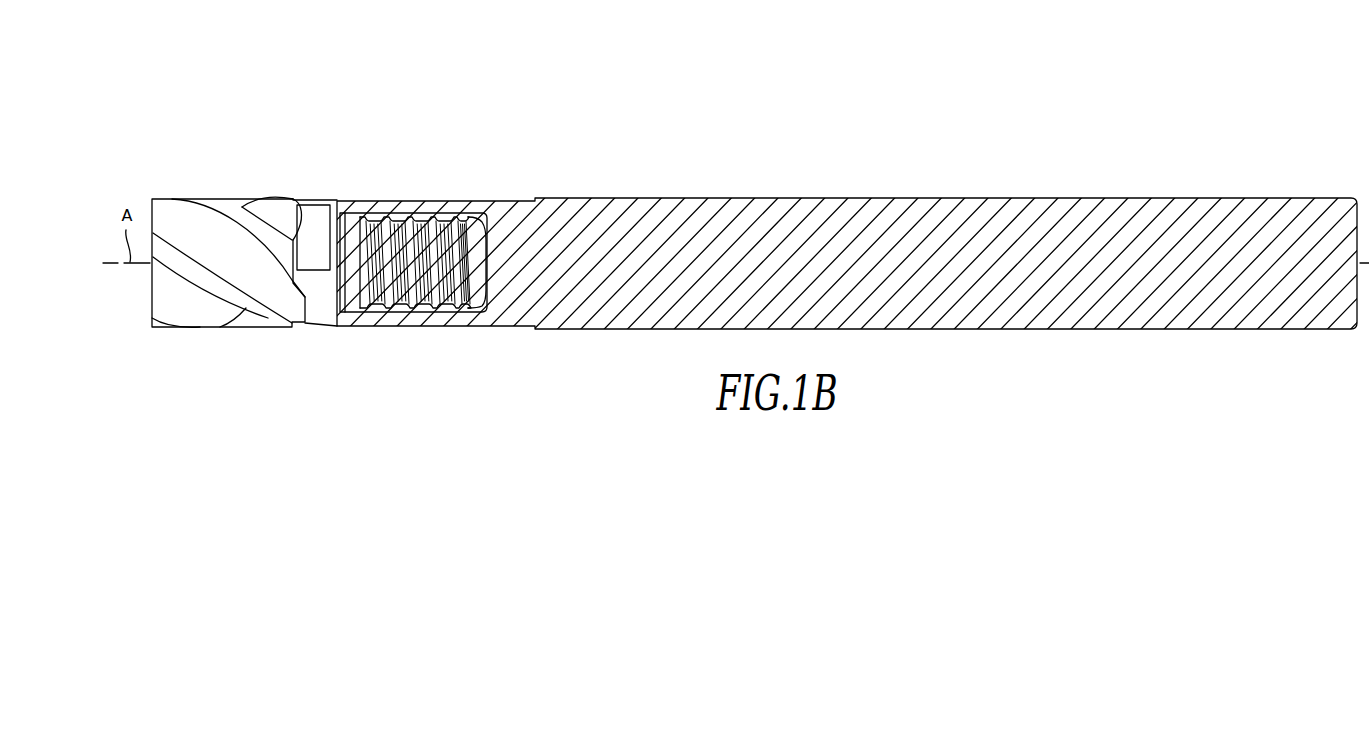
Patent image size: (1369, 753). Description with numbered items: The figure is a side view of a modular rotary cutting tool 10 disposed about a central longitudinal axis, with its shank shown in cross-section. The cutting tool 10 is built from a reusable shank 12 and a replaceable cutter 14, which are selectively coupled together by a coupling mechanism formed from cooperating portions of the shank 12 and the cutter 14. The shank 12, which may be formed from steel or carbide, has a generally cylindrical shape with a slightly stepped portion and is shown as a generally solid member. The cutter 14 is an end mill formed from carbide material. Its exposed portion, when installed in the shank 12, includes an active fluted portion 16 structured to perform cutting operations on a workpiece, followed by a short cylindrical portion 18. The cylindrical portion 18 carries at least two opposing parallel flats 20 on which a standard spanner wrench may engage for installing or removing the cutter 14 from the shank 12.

The modular rotary cutting tool 10 is at (617, 122).
The shank 12 is at (836, 198).
The cutter 14 is at (243, 308).
The active fluted portion 16 is at (193, 218).
The cylindrical portion 18 is at (326, 310).
The flats 20 is at (316, 217).